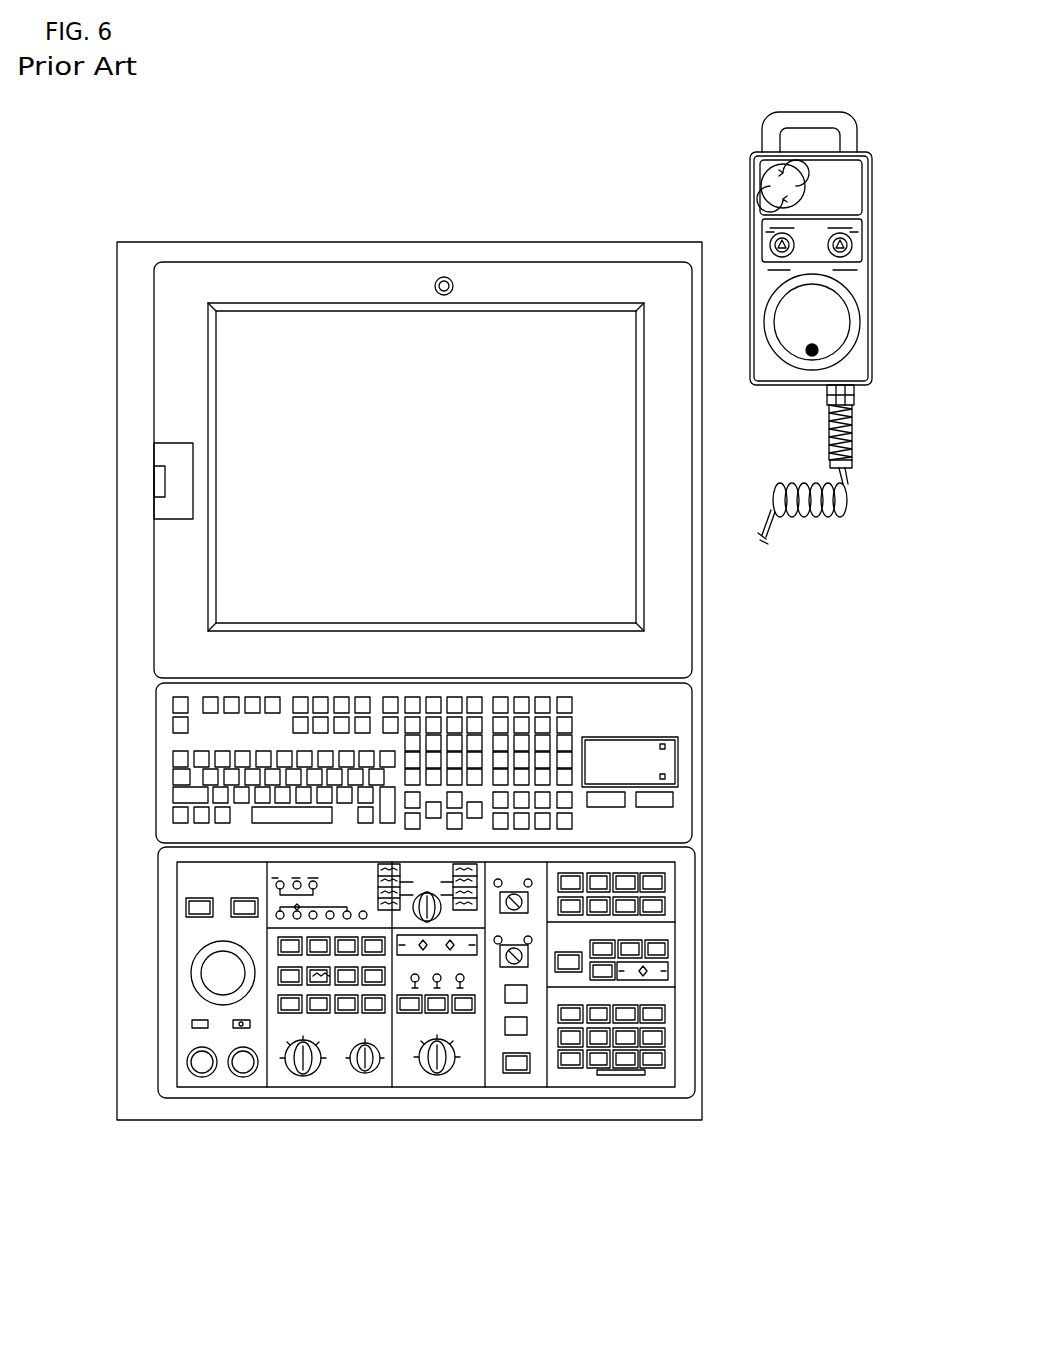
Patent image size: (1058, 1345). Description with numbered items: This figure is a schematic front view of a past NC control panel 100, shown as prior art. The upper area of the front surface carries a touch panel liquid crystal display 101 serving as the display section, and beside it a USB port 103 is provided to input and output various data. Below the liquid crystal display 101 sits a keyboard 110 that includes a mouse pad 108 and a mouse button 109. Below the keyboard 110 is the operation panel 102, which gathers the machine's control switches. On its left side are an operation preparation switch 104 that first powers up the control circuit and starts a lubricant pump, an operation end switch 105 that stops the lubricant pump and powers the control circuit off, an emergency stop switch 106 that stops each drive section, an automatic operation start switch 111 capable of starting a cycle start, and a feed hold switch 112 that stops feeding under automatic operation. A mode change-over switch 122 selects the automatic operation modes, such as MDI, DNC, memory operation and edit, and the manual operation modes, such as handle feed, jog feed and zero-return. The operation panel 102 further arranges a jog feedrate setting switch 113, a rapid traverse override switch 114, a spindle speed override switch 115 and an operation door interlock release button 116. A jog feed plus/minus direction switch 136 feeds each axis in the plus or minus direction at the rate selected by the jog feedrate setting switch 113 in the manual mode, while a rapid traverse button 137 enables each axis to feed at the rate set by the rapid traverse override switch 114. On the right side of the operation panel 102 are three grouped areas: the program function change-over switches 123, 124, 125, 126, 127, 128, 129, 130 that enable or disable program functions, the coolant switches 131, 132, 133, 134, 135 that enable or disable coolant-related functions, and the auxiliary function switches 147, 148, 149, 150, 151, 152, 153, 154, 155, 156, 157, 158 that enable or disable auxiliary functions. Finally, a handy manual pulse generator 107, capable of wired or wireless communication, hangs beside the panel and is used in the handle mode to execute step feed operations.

The NC control panel 100 is at (149, 190).
The touch panel liquid crystal display 101 is at (533, 340).
The operation panel 102 is at (163, 1070).
The USB port 103 is at (170, 451).
The operation preparation switch 104 is at (187, 907).
The operation end switch 105 is at (232, 907).
The emergency stop switch 106 is at (227, 975).
The handy manual pulse generator 107 is at (872, 207).
The mouse pad 108 is at (647, 752).
The mouse button 109 is at (650, 797).
The keyboard 110 is at (660, 710).
The automatic operation start switch 111 is at (197, 1062).
The feed hold switch 112 is at (243, 1062).
The jog feedrate setting switch 113 is at (303, 1058).
The rapid traverse override switch 114 is at (367, 1060).
The spindle speed override switch 115 is at (437, 1060).
The operation door interlock release button 116 is at (516, 1065).
The mode change-over switch 122 is at (421, 872).
The program function change-over switch 123 is at (572, 882).
The program function change-over switch 124 is at (652, 882).
The program function change-over switch 125 is at (598, 882).
The program function change-over switch 126 is at (598, 906).
The program function change-over switch 127 is at (625, 882).
The program function change-over switch 128 is at (625, 906).
The program function change-over switch 129 is at (572, 906).
The program function change-over switch 130 is at (652, 906).
The coolant function change-over switch 131 is at (643, 971).
The coolant function change-over switch 132 is at (602, 949).
The coolant function change-over switch 133 is at (580, 962).
The coolant function change-over switch 134 is at (630, 949).
The coolant function change-over switch 135 is at (602, 971).
The jog feed direction switch 136 is at (275, 1017).
The rapid traverse button 137 is at (313, 986).
The auxiliary function change-over switch 147 is at (570, 1016).
The auxiliary function change-over switch 148 is at (652, 1014).
The auxiliary function change-over switch 149 is at (625, 1014).
The auxiliary function change-over switch 150 is at (652, 1037).
The auxiliary function change-over switch 151 is at (571, 1040).
The auxiliary function change-over switch 152 is at (598, 1040).
The auxiliary function change-over switch 153 is at (628, 1040).
The auxiliary function change-over switch 154 is at (652, 1059).
The auxiliary function change-over switch 155 is at (573, 1062).
The auxiliary function change-over switch 156 is at (598, 1062).
The auxiliary function change-over switch 157 is at (625, 1062).
The auxiliary function change-over switch 158 is at (598, 1014).